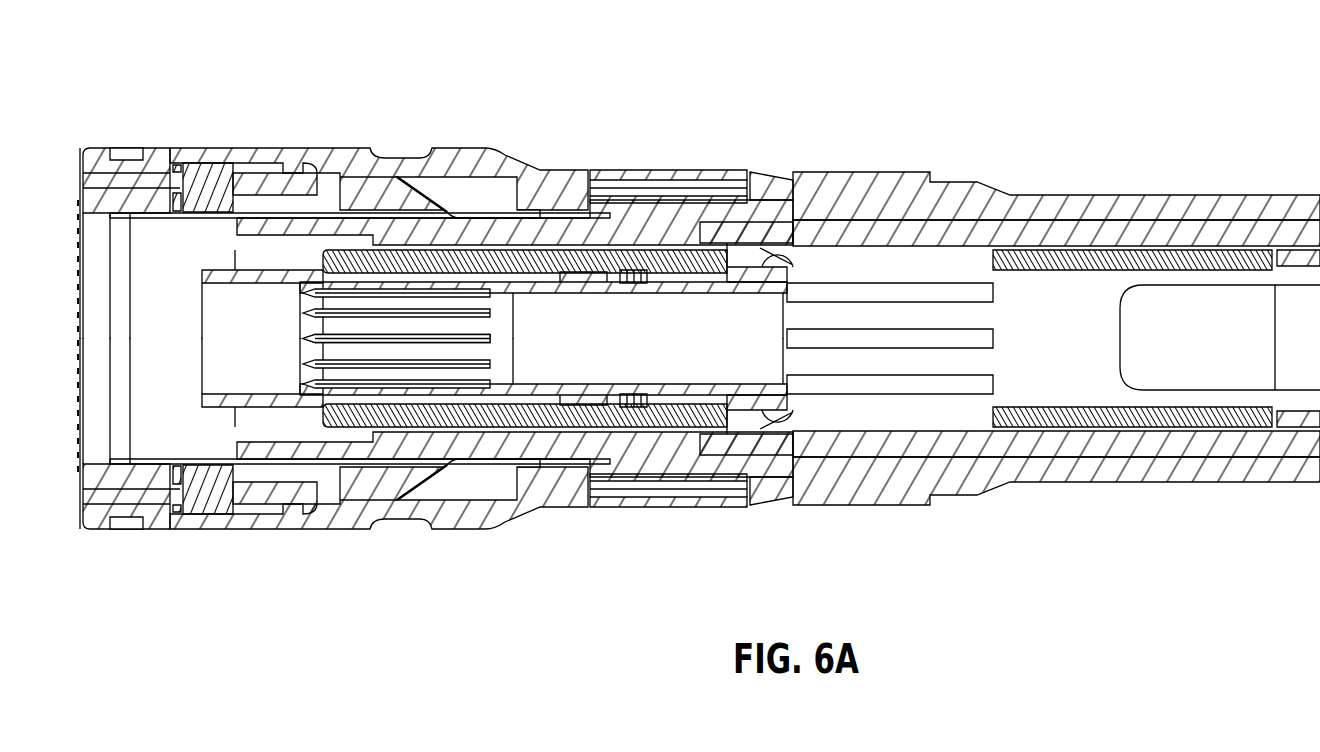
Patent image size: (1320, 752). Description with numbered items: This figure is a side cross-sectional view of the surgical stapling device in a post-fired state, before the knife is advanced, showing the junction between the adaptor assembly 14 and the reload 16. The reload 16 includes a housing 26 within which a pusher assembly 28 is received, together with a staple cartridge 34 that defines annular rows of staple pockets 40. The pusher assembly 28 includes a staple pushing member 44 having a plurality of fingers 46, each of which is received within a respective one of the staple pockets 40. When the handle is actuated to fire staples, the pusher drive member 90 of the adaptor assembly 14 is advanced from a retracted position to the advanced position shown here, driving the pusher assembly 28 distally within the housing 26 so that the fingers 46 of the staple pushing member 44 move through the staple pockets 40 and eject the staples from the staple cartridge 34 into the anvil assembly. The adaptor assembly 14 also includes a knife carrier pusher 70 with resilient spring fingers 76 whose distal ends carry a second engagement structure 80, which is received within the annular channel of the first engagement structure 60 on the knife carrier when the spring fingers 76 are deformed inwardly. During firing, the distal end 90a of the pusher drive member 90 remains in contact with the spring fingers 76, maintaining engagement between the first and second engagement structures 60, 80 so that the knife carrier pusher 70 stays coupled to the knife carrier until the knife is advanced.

The adaptor assembly 14 is at (1236, 190).
The reload 16 is at (347, 144).
The housing 26 is at (331, 528).
The pusher assembly 28 is at (458, 201).
The staple cartridge 34 is at (155, 145).
The staple pockets 40 is at (195, 175).
The staple pushing member 44 is at (231, 165).
The fingers 46 is at (103, 177).
The first engagement structure 60 is at (782, 245).
The knife carrier pusher 70 is at (1062, 428).
The spring fingers 76 is at (822, 267).
The second engagement structure 80 is at (735, 255).
The pusher drive member 90 is at (1119, 224).
The distal end of pusher drive member 90a is at (735, 232).